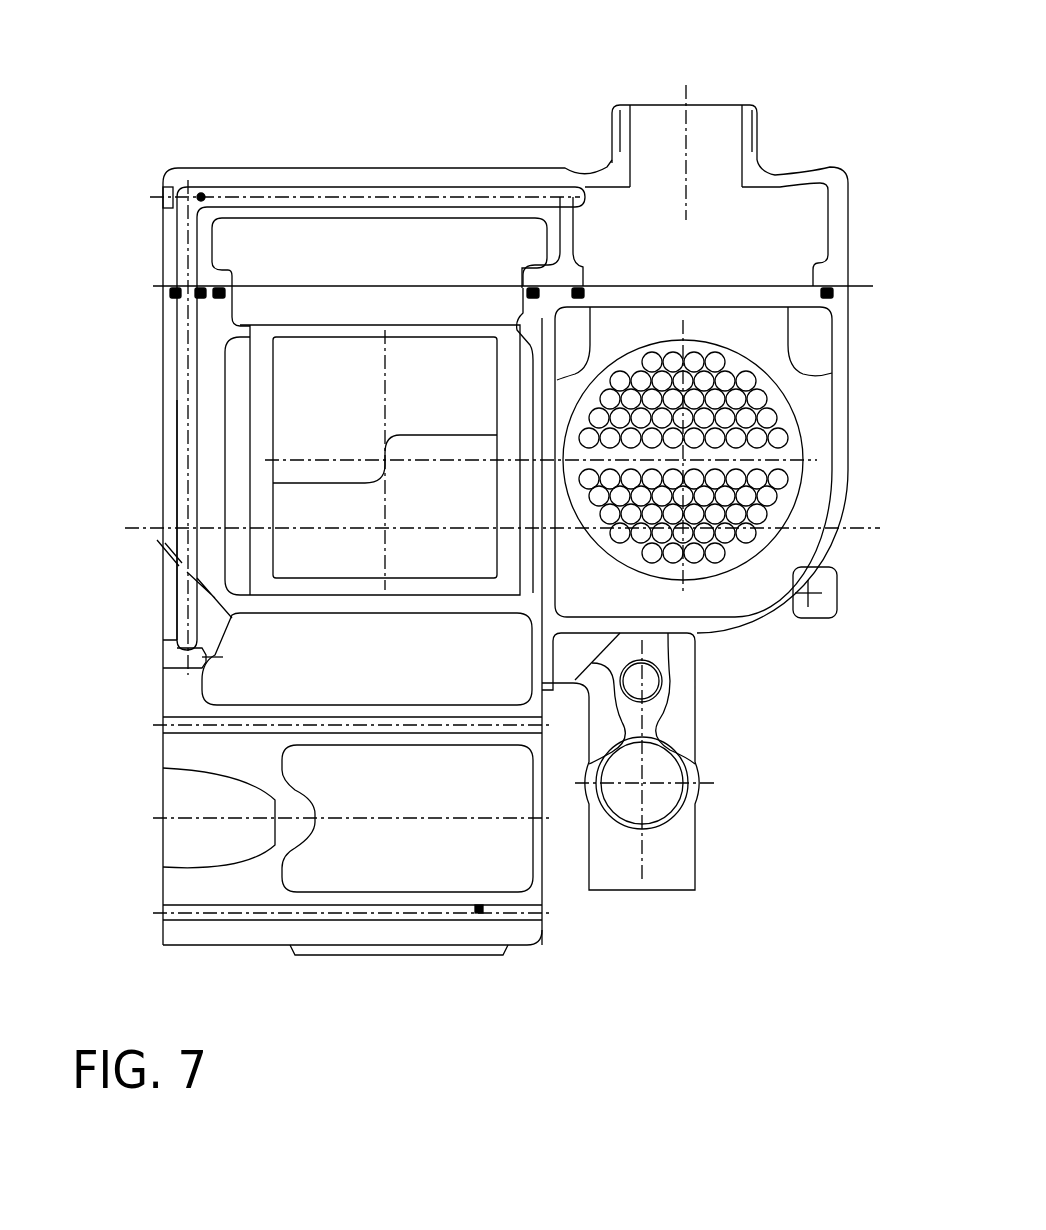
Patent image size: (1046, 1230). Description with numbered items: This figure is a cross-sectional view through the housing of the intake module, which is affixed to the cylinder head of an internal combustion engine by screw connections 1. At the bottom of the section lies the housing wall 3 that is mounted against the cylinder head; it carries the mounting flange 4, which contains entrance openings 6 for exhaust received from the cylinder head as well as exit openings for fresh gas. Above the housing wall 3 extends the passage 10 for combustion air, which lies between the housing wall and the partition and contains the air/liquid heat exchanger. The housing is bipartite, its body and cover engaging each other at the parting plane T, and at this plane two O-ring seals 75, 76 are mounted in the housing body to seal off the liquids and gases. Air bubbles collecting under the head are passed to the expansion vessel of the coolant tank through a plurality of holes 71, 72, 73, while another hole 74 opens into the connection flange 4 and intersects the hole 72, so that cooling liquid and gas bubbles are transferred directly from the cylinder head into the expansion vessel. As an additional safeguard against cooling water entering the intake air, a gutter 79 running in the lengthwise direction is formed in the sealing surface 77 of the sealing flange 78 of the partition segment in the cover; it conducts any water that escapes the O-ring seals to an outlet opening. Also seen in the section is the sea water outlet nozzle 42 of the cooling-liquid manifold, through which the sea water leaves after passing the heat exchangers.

The screw connections 1 is at (479, 909).
The housing wall 3 is at (170, 370).
The mounting flange 4 is at (163, 752).
The entrance openings 6 is at (191, 842).
The passage for combustion air 10 is at (228, 362).
The sea water outlet nozzle 42 is at (679, 866).
The hole 71 is at (201, 584).
The hole 72 is at (186, 430).
The hole 73 is at (200, 194).
The hole 74 is at (176, 664).
The O-ring seal 75 is at (222, 284).
The O-ring seal 76 is at (827, 282).
The sealing surface 77 is at (580, 270).
The sealing flange 78 is at (540, 265).
The gutter 79 is at (556, 268).
The parting plane T is at (873, 278).